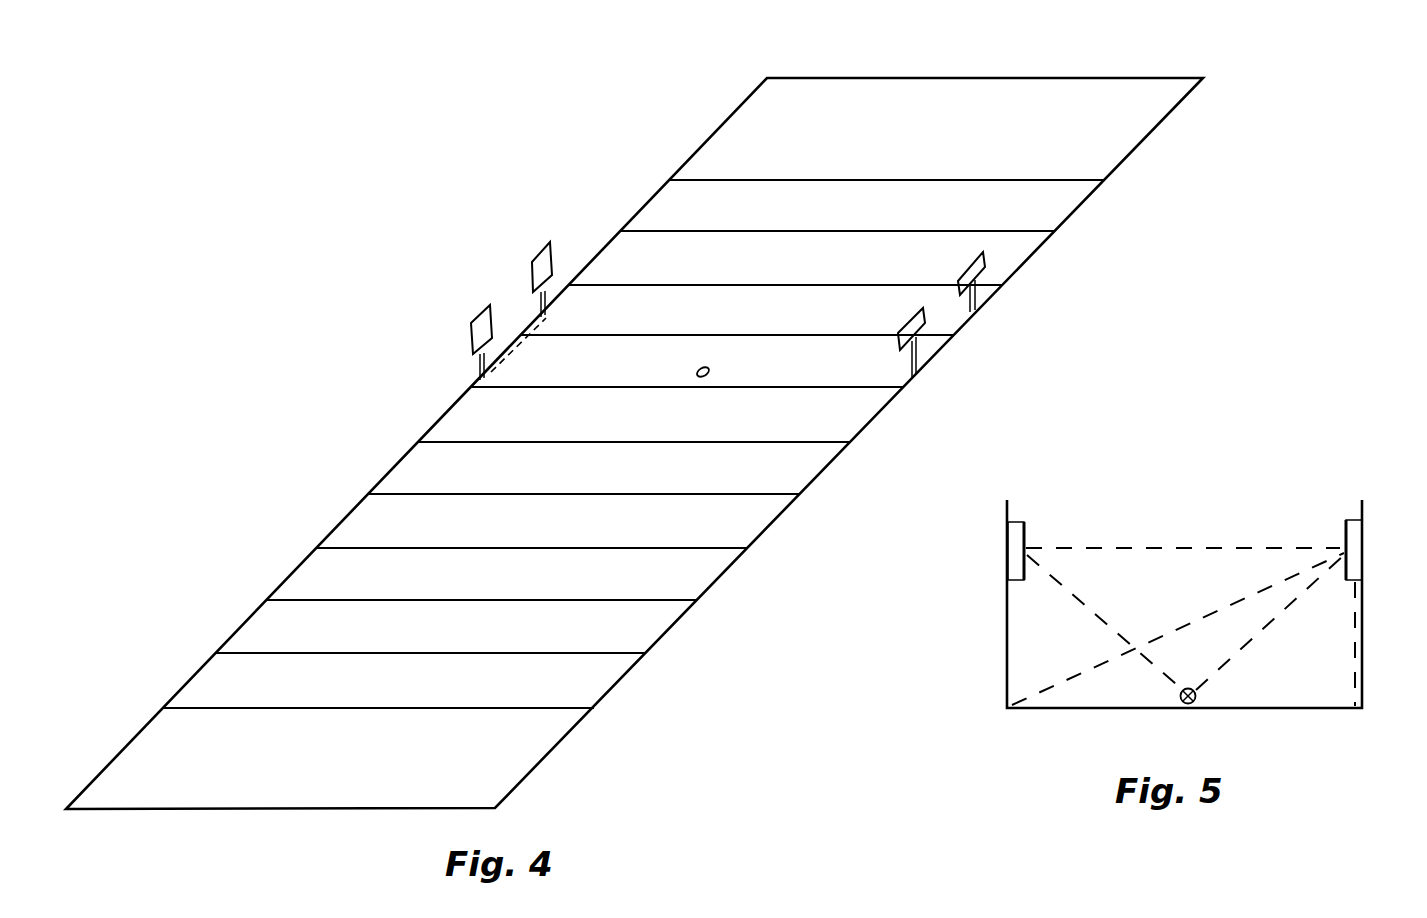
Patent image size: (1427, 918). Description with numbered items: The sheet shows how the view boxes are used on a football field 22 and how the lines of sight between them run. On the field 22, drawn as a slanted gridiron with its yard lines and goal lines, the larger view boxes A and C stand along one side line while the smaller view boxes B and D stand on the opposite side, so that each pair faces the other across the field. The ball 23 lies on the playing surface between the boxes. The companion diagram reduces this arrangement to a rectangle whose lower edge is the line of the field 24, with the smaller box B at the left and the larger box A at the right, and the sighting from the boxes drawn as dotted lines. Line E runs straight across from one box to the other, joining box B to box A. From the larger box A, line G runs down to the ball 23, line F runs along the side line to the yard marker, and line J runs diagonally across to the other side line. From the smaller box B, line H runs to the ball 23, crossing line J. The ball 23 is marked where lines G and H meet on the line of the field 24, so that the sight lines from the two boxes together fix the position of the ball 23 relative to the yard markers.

In FIG. 4, the football field 22 is at (568, 733).
In FIG. 4, the ball 23 is at (710, 370).
In FIG. 5, the ball 23 is at (1196, 692).
In FIG. 5, the line of the field 24 is at (1085, 708).
In FIG. 4, the larger view box A is at (925, 322).
In FIG. 5, the larger view box A is at (1364, 548).
In FIG. 4, the smaller view box B is at (471, 338).
In FIG. 5, the smaller view box B is at (1007, 557).
In FIG. 4, the larger view box C is at (985, 255).
In FIG. 4, the smaller view box D is at (530, 270).
In FIG. 5, the line from one box to the other E is at (1183, 537).
In FIG. 5, the line from the larger box to the yard marker F is at (1346, 644).
In FIG. 5, the line from the larger box to the ball G is at (1270, 622).
In FIG. 5, the line from the smaller box to the ball H is at (1105, 623).
In FIG. 5, the line from the larger box to the other side line J is at (1178, 629).